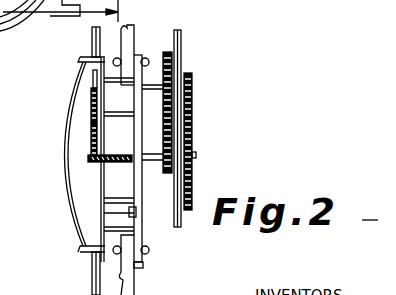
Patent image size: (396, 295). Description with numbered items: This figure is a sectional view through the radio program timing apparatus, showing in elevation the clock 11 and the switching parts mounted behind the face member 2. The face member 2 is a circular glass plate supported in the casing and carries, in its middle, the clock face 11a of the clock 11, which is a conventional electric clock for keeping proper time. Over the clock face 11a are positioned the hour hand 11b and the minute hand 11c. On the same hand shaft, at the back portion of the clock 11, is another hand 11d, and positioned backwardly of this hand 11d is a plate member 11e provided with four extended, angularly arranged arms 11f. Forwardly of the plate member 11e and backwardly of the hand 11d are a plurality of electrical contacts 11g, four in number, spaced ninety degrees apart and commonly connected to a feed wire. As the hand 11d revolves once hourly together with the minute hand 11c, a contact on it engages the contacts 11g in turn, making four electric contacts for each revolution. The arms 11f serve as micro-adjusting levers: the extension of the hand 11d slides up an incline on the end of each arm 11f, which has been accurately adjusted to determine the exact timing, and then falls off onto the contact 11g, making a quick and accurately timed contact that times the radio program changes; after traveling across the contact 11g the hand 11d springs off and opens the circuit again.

The face member 2 is at (92, 42).
The clock 11 is at (110, 147).
The clock face 11a is at (93, 120).
The hour hand 11b is at (97, 128).
The minute hand 11c is at (92, 75).
The hand 11d is at (97, 160).
The plate member 11e is at (136, 212).
The arms 11f is at (122, 40).
The electrical contacts 11g is at (135, 212).